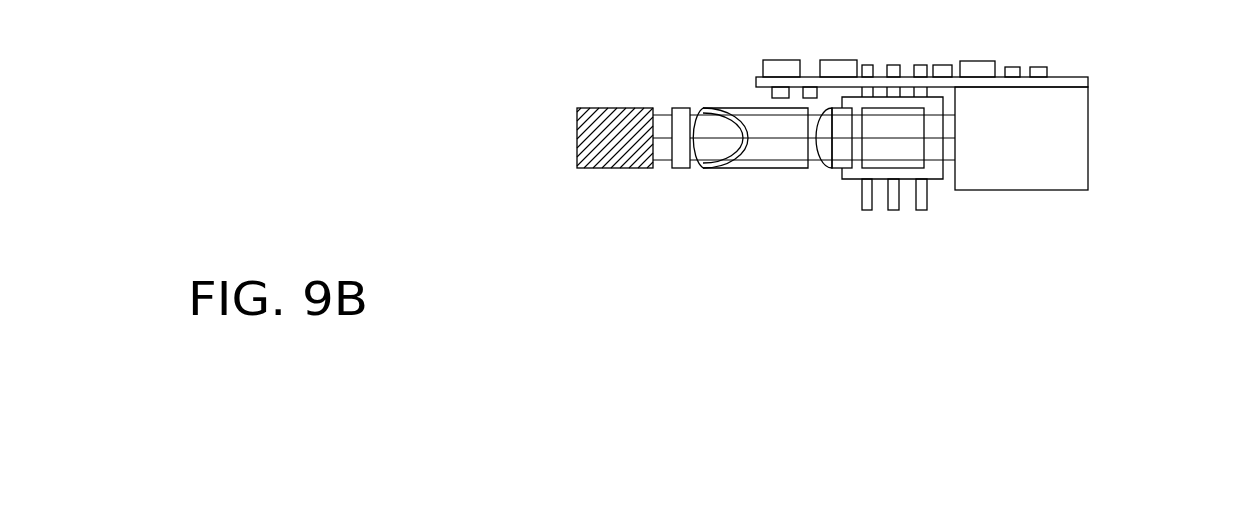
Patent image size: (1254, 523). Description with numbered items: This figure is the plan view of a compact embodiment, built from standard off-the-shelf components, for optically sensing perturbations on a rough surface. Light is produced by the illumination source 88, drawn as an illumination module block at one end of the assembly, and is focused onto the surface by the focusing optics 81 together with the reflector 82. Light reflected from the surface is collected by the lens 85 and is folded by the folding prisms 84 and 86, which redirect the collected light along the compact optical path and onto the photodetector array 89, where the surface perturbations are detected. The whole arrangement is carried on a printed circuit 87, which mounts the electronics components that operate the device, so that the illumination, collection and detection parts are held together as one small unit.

The focusing optics 81 is at (678, 168).
The reflector 82 is at (580, 127).
The folding prism 84 is at (792, 150).
The lens 85 is at (840, 168).
The folding prism 86 is at (915, 168).
The printed circuit 87 is at (1075, 77).
The illumination source 88 is at (1050, 182).
The photodetector array 89 is at (935, 182).